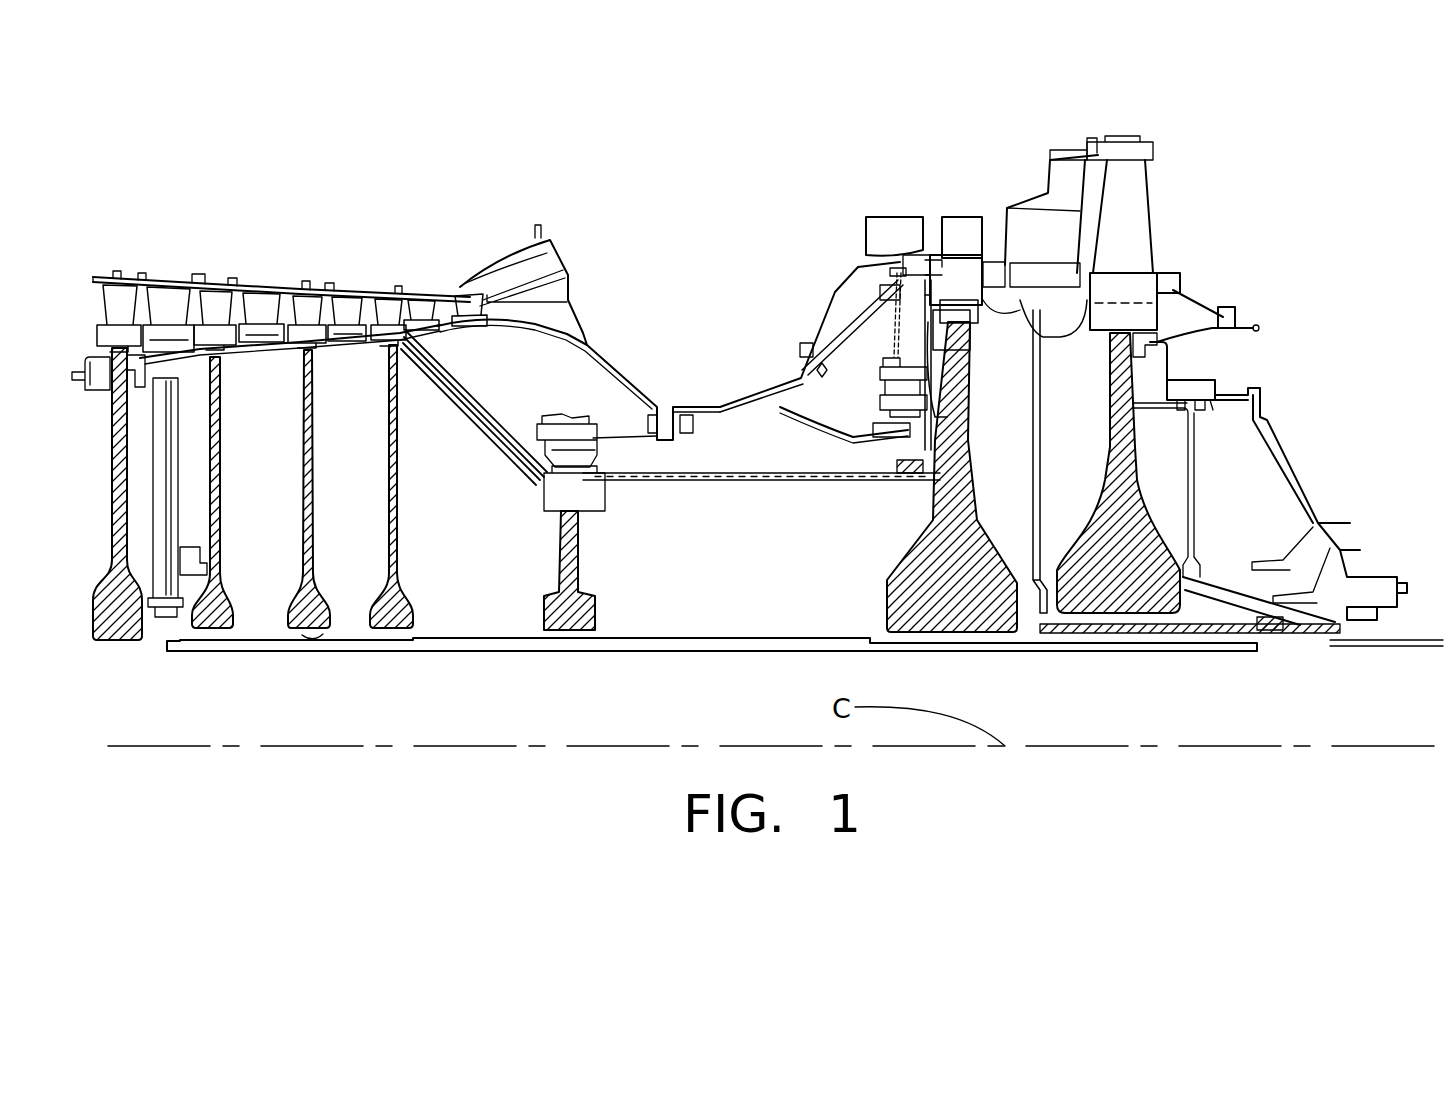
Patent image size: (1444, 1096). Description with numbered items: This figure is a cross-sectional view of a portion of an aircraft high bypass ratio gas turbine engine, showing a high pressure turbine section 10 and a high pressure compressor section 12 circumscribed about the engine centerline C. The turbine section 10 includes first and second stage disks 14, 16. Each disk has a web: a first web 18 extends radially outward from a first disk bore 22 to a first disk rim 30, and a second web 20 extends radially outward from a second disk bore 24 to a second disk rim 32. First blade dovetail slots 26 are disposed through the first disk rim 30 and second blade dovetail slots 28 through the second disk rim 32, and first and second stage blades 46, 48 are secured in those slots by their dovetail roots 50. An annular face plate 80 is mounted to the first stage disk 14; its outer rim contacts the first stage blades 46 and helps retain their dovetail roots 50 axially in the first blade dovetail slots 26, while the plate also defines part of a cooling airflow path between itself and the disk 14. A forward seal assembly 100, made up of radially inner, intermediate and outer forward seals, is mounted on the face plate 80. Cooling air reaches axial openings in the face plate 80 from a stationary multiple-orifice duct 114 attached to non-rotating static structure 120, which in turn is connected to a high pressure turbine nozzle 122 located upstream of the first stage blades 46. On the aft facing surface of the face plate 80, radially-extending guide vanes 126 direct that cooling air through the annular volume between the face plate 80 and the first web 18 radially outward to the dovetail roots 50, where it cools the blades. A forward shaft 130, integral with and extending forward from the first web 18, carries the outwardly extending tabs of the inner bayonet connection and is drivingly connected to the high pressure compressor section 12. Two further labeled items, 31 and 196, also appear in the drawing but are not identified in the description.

The high pressure turbine section 10 is at (1176, 253).
The high pressure compressor section 12 is at (352, 272).
The first stage disk 14 is at (950, 525).
The second stage disk 16 is at (1127, 377).
The first web 18 is at (975, 388).
The second web 20 is at (1110, 442).
The first disk bore 22 is at (873, 628).
The second disk bore 24 is at (1107, 543).
The first blade dovetail slots 26 is at (950, 262).
The second blade dovetail slots 28 is at (1103, 287).
The first disk rim 30 is at (887, 362).
The stator vane 31 is at (1060, 152).
The second disk rim 32 is at (1190, 337).
The first stage blades 46 is at (950, 280).
The second stage blades 48 is at (1123, 217).
The dovetail roots 50 is at (905, 264).
The annular face plate 80 is at (935, 335).
The forward seal assembly 100 is at (864, 454).
The multiple-orifice duct 114 is at (813, 422).
The non-rotating static structure 120 is at (823, 344).
The high pressure turbine nozzle 122 is at (900, 235).
The guide vanes 126 is at (970, 495).
The forward shaft 130 is at (860, 481).
The shaft 196 is at (636, 652).